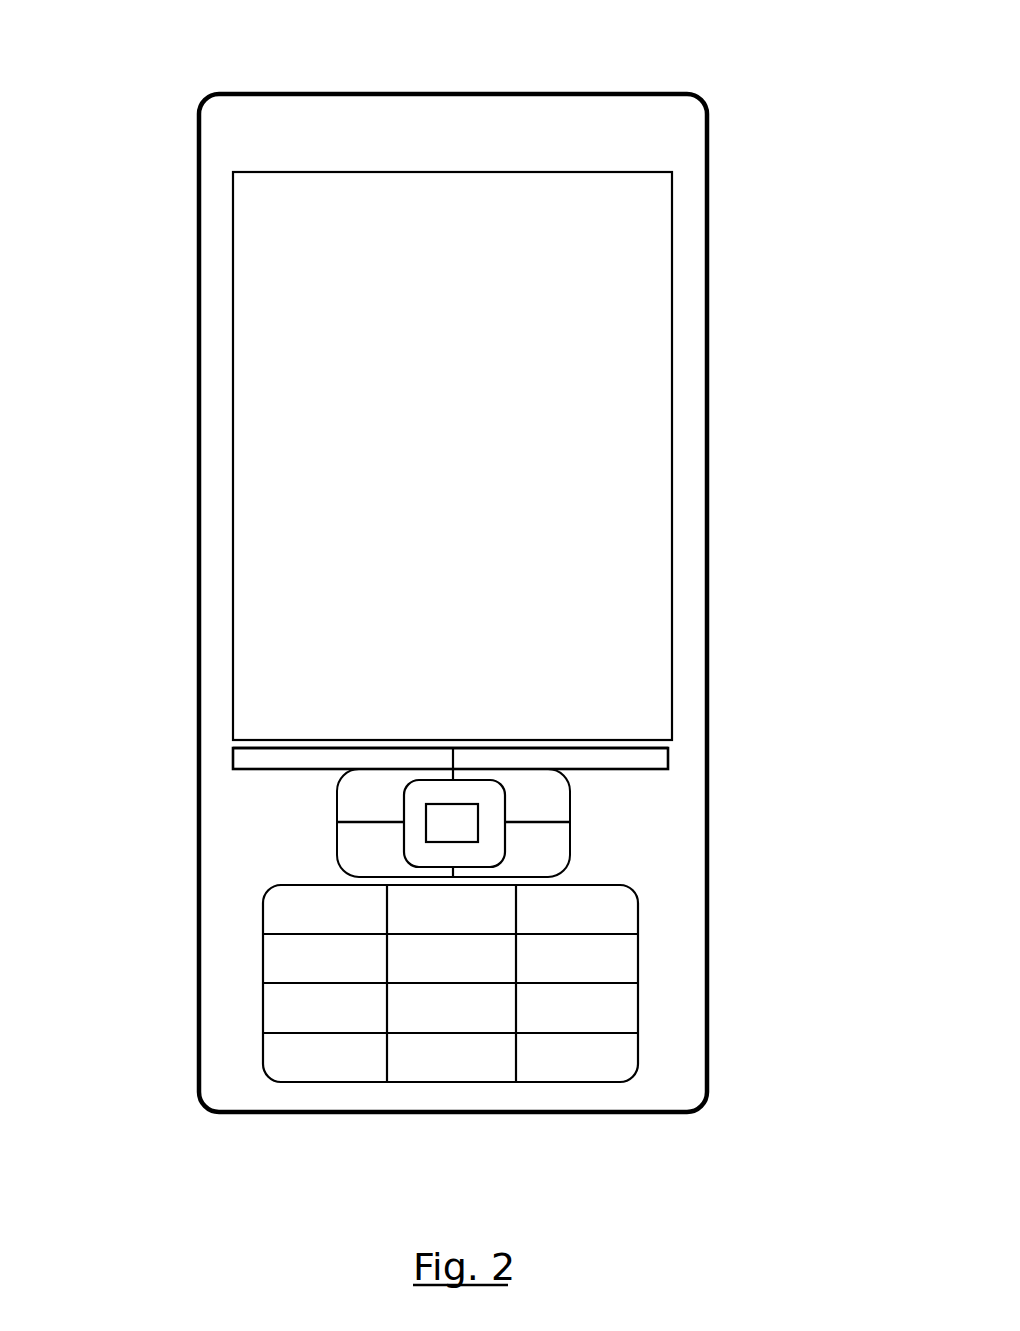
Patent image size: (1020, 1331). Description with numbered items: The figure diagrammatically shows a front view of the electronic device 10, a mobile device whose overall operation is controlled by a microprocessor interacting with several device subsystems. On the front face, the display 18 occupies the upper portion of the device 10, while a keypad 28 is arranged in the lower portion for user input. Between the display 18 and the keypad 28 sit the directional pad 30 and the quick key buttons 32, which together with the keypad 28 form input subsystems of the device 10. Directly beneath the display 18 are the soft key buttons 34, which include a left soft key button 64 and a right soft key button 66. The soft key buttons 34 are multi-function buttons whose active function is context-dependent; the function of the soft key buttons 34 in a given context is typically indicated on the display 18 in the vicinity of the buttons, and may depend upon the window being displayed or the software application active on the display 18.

The electronic device 10 is at (675, 53).
The display 18 is at (578, 270).
The keypad 28 is at (657, 908).
The directional pad 30 is at (480, 790).
The quick key buttons 32 is at (380, 797).
The soft key buttons 34 is at (273, 758).
The left soft key button 64 is at (302, 758).
The right soft key button 66 is at (617, 758).